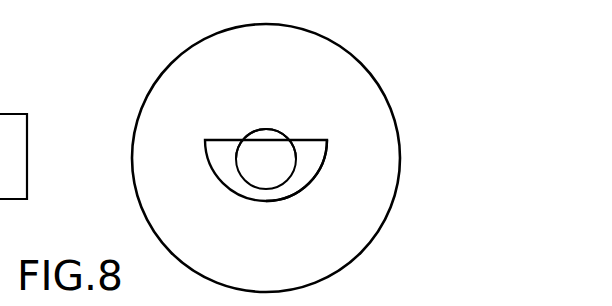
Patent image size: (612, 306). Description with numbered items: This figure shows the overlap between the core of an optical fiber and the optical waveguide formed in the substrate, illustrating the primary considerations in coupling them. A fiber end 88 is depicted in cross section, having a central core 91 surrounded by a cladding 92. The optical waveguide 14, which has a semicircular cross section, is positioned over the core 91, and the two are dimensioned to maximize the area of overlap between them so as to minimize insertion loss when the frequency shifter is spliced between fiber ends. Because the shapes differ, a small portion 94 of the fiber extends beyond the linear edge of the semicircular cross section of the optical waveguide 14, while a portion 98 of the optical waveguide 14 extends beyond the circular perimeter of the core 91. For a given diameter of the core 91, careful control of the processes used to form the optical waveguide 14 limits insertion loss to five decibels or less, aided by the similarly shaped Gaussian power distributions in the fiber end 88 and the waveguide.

The fiber end 88 is at (158, 61).
The cladding 92 is at (360, 62).
The optical waveguide 14 is at (222, 138).
The small portion of the fiber 94 is at (260, 128).
The core 91 is at (238, 166).
The portion of the optical waveguide 98 is at (303, 187).